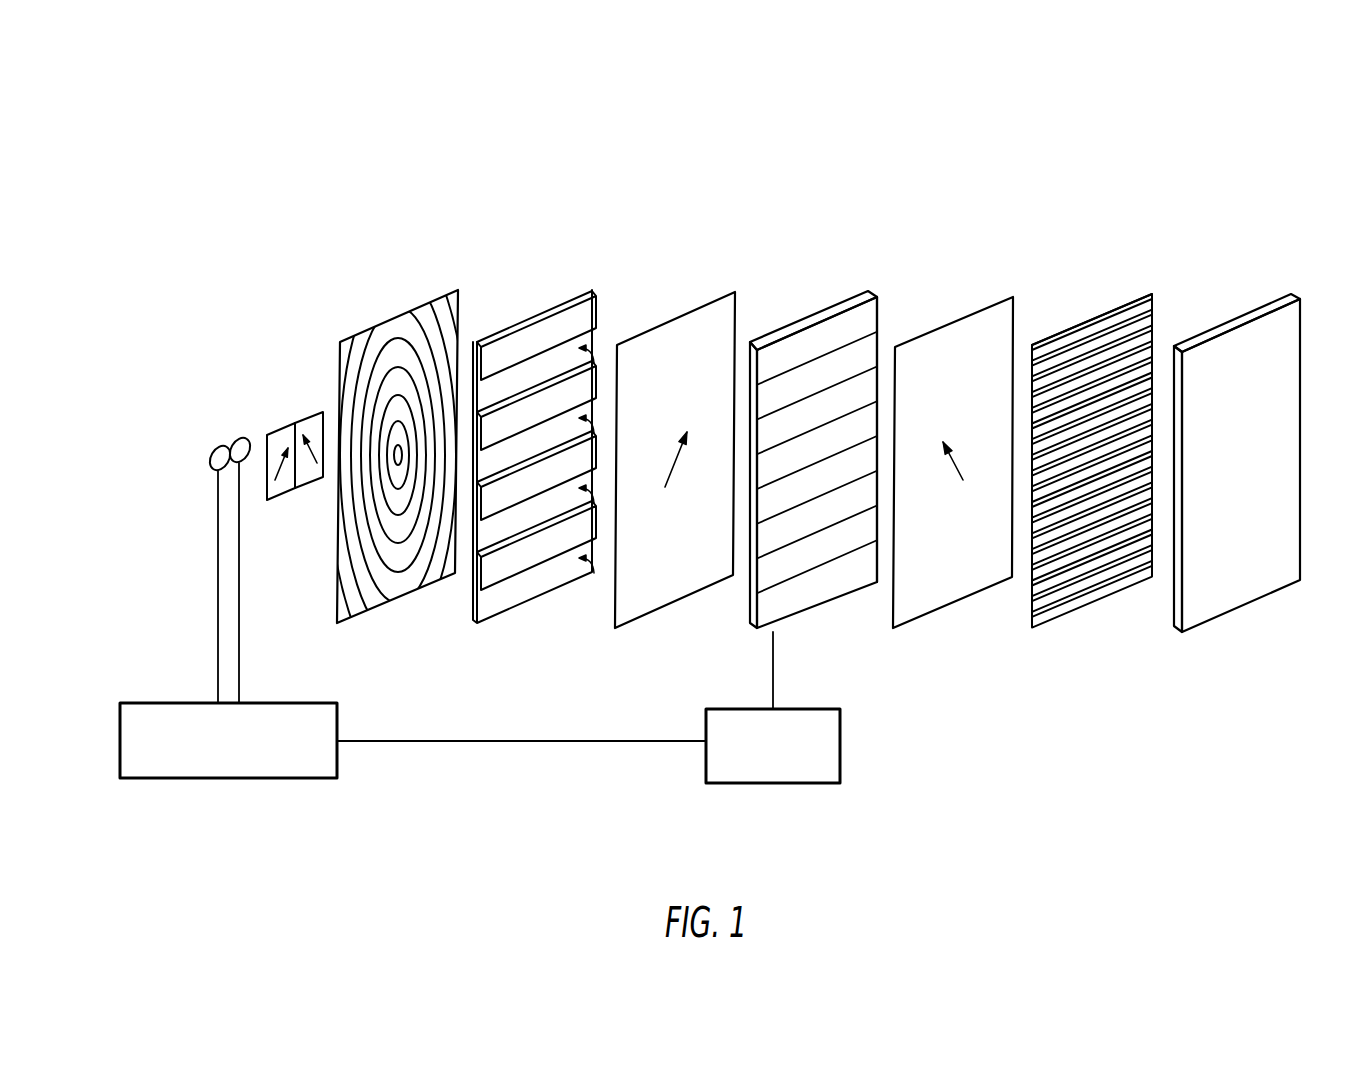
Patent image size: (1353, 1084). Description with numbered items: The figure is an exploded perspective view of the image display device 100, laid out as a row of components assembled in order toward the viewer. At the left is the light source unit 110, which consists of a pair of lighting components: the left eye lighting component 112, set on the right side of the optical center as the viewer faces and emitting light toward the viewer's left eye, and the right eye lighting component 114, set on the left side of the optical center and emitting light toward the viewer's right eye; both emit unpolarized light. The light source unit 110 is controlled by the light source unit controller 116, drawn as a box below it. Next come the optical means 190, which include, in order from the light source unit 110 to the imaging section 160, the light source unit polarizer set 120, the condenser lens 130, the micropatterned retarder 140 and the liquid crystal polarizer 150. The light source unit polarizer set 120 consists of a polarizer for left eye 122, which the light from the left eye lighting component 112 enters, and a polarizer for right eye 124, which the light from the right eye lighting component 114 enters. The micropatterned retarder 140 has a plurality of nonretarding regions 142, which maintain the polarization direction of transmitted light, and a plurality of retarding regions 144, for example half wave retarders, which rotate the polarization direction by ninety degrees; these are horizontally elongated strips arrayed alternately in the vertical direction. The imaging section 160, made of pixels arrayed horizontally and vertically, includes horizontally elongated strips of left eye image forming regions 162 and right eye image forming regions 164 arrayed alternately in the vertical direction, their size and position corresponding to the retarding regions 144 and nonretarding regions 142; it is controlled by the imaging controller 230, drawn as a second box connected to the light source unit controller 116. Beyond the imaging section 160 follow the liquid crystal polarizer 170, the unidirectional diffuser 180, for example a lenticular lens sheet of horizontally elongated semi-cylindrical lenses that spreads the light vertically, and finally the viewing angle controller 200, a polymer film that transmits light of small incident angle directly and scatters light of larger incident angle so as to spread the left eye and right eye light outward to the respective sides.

The image display device 100 is at (1158, 127).
The light source unit 110 is at (240, 380).
The left eye lighting component 112 is at (240, 438).
The right eye lighting component 114 is at (214, 446).
The light source unit controller 116 is at (225, 778).
The light source unit polarizer set 120 is at (297, 252).
The polarizer for left eye 122 is at (313, 415).
The polarizer for right eye 124 is at (283, 422).
The condenser lens 130 is at (398, 312).
The micropatterned retarder 140 is at (627, 256).
The nonretarding regions 142 is at (537, 330).
The retarding regions 144 is at (605, 312).
The liquid crystal polarizer 150 is at (700, 302).
The imaging section 160 is at (912, 255).
The left eye image forming regions 162 is at (884, 344).
The right eye image forming regions 164 is at (818, 332).
The liquid crystal polarizer 170 is at (973, 312).
The unidirectional diffuser 180 is at (1088, 320).
The optical means 190 is at (700, 204).
The viewing angle controller 200 is at (1230, 320).
The imaging controller 230 is at (773, 783).